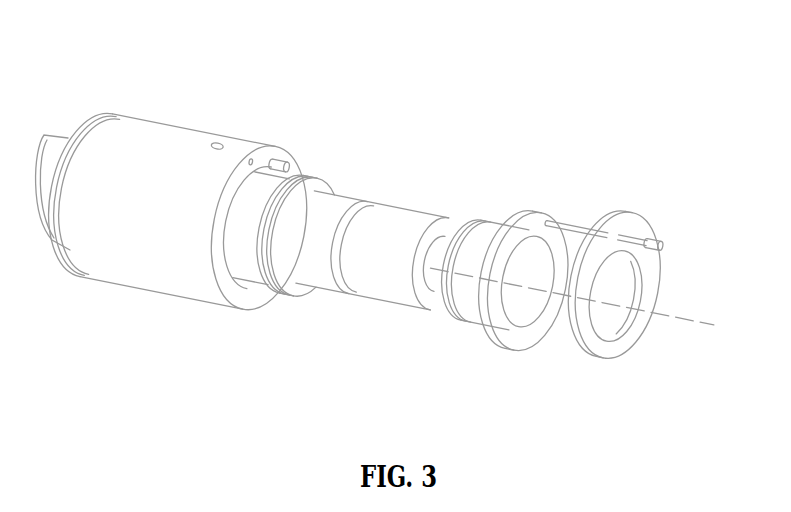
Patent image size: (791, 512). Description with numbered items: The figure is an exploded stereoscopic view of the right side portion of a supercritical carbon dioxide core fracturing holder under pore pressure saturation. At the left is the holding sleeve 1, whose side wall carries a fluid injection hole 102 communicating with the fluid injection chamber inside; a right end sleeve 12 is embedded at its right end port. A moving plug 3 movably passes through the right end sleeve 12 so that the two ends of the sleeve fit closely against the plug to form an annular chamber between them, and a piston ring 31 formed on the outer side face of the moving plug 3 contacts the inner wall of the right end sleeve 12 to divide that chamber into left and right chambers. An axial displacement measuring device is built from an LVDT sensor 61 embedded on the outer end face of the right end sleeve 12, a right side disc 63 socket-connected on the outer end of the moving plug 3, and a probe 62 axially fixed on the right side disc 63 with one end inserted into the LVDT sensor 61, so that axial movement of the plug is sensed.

The holding sleeve 1 is at (158, 152).
The fluid injection hole 102 is at (222, 145).
The LVDT sensor 61 is at (287, 158).
The piston ring 31 is at (283, 292).
The moving plug 3 is at (382, 237).
The right end sleeve 12 is at (490, 235).
The right side disc 63 is at (612, 222).
The probe 62 is at (658, 238).